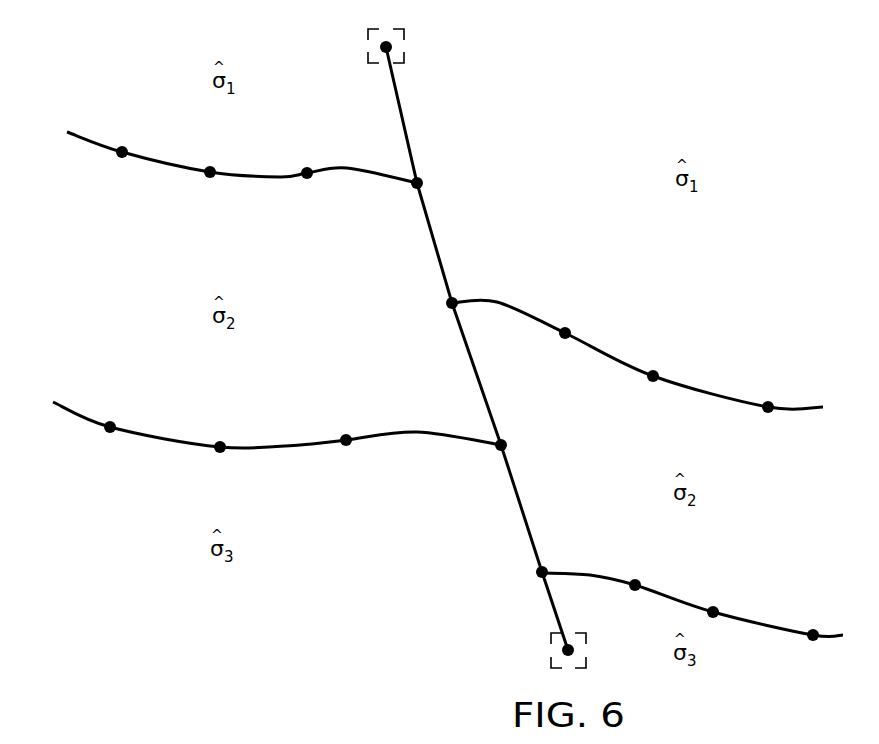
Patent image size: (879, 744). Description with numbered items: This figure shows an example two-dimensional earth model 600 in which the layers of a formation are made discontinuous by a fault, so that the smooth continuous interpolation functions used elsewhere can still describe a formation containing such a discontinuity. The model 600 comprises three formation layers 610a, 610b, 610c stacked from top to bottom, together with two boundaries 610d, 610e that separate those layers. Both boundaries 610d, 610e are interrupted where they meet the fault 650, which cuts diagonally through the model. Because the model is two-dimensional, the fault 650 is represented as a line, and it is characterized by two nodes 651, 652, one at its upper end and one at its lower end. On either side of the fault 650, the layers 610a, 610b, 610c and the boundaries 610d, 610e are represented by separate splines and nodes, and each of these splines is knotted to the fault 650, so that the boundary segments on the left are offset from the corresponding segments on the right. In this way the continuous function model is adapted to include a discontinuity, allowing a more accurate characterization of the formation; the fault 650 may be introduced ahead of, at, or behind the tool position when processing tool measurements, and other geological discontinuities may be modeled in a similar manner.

The model 600 is at (617, 84).
The formation layer 610a is at (120, 84).
The formation layer 610b is at (120, 283).
The formation layer 610c is at (119, 557).
The boundary 610d is at (257, 173).
The boundary 610e is at (285, 452).
The fault 650 is at (403, 118).
The node 651 is at (368, 33).
The node 652 is at (550, 662).